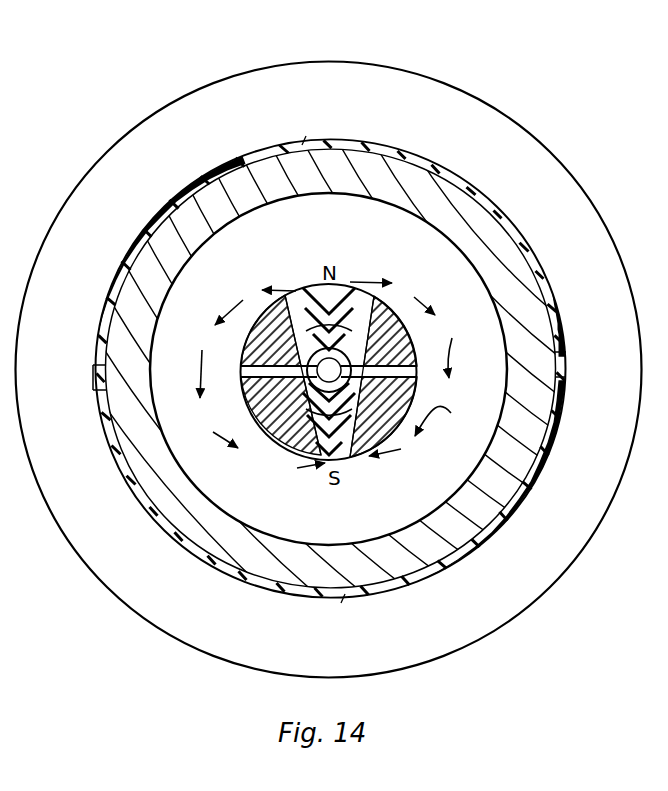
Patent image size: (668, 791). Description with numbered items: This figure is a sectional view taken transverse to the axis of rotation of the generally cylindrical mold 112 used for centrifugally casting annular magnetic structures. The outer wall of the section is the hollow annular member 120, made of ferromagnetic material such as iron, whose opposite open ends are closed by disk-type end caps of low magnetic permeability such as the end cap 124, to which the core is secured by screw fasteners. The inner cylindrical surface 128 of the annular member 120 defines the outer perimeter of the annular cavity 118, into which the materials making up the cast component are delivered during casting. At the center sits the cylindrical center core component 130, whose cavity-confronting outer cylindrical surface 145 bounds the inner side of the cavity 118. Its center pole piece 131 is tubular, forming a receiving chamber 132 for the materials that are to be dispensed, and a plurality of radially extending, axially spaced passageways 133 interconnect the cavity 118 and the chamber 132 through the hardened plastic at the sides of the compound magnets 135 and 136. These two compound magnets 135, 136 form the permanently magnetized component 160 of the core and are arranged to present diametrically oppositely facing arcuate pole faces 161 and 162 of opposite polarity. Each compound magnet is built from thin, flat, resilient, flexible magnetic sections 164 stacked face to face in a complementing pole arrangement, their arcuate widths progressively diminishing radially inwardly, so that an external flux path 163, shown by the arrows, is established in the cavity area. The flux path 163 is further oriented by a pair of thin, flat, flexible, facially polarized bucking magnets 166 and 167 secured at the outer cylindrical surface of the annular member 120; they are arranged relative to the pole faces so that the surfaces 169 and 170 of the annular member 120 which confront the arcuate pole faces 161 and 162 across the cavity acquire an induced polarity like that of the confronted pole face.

The mold 112 is at (572, 172).
The annular cavity 118 is at (478, 296).
The annular member 120 is at (556, 362).
The end cap 124 is at (329, 370).
The inner cylindrical surface 128 is at (166, 302).
The center core component 130 is at (420, 371).
The center pole piece 131 is at (404, 337).
The receiving chamber 132 is at (262, 397).
The passageways 133 is at (241, 368).
The compound magnet 135 is at (300, 287).
The compound magnet 136 is at (297, 457).
The outer cylindrical surface 145 is at (450, 421).
The permanently magnetized component 160 is at (354, 470).
The arcuate pole face 161 is at (347, 281).
The arcuate pole face 162 is at (374, 457).
The flux path 163 is at (452, 336).
The magnetic sections 164 is at (317, 468).
The bucking magnet 166 is at (346, 141).
The bucking magnet 167 is at (384, 587).
The surface of the annular member 169 is at (330, 193).
The surface of the annular member 170 is at (338, 548).